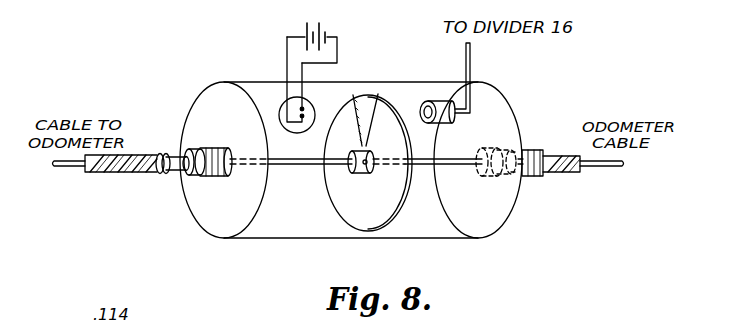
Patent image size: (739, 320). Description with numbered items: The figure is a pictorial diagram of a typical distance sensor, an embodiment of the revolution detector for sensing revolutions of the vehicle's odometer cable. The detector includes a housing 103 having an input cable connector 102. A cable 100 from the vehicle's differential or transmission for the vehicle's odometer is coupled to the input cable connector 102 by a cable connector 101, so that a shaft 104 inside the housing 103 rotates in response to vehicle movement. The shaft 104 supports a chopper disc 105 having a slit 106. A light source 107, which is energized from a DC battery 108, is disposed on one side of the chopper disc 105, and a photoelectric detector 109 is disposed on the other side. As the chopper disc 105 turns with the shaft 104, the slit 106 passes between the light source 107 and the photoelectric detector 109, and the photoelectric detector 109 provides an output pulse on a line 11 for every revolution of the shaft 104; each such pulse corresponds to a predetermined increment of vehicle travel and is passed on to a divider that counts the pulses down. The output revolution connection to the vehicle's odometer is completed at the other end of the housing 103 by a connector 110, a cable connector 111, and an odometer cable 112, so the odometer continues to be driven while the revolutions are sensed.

The cable 100 is at (118, 173).
The cable connector 101 is at (172, 150).
The input cable connector 102 is at (205, 173).
The housing 103 is at (232, 83).
The shaft 104 is at (298, 163).
The chopper disc 105 is at (390, 222).
The slit 106 is at (370, 95).
The light source 107 is at (280, 106).
The DC battery 108 is at (325, 31).
The photoelectric detector 109 is at (435, 101).
The line 11 is at (469, 64).
The connector 110 is at (500, 178).
The cable connector 111 is at (533, 150).
The odometer cable 112 is at (553, 170).